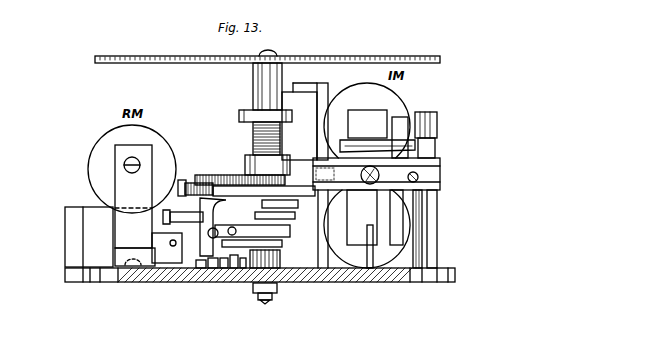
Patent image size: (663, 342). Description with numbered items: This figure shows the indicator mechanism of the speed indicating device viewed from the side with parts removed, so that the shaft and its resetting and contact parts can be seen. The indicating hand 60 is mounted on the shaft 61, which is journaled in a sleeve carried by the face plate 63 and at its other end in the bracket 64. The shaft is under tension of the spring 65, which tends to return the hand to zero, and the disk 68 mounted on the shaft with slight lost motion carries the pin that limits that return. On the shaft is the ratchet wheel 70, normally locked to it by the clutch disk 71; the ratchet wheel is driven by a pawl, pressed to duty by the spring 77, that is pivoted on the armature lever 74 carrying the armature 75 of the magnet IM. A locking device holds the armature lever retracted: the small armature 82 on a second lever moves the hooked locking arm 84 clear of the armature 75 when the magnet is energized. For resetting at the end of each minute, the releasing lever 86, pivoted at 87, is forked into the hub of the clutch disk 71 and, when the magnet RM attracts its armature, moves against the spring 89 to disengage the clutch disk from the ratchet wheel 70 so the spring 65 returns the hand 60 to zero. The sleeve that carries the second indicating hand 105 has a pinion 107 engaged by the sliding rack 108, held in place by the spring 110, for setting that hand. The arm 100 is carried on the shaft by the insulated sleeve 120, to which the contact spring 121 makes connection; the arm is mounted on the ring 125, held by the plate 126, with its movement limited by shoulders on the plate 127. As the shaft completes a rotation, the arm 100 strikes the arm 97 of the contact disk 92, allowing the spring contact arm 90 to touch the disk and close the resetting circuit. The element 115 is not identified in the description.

The top plate 115 is at (331, 57).
The bracket 64 is at (305, 121).
The disk 68 is at (241, 114).
The spring 65 is at (253, 142).
The ratchet wheel 70 is at (245, 166).
The contact disk 92 is at (187, 183).
The spring contact arm 90 is at (182, 180).
The contact spring 121 is at (184, 211).
The arm 97 is at (216, 227).
The clutch disk 71 is at (292, 203).
The sleeve 120 is at (290, 216).
The ring 125 is at (290, 230).
The ring or plate 126 is at (285, 244).
The toothed portion or pinion 107 is at (283, 258).
The releasing lever 86 is at (190, 250).
The pivot 87 is at (170, 244).
The face plate 63 is at (409, 282).
The armature 75 is at (367, 124).
The small armature 82 is at (403, 118).
The locking arm 84 is at (415, 148).
The spring 77 is at (442, 180).
The armature lever 74 is at (420, 190).
The second indicating hand 105 is at (280, 290).
The indicating hand 60 is at (273, 298).
The shaft 61 is at (266, 303).
The sliding rack 108 is at (244, 270).
The plate 127 is at (236, 258).
The arm 100 is at (226, 260).
The spring 110 is at (212, 268).
The spring 89 is at (202, 270).